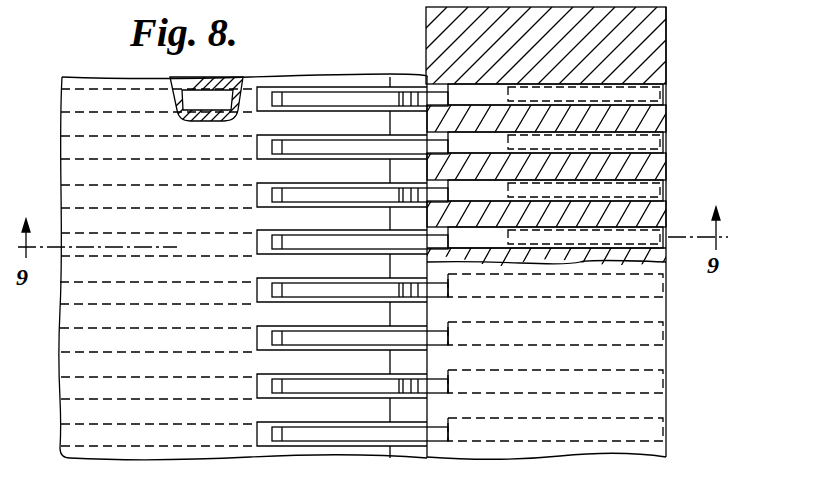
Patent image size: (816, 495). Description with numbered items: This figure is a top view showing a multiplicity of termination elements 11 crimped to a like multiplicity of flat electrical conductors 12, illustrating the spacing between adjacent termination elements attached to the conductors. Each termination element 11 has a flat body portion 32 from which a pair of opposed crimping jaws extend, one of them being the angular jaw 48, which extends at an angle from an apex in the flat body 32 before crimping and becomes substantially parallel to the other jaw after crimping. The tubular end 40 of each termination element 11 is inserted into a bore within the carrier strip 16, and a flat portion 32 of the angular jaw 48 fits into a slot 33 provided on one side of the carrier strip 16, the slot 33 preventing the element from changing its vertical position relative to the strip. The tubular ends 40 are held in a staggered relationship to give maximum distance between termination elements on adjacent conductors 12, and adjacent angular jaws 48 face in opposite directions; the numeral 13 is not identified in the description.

The body member 13 is at (62, 77).
The flat electrical conductor 12 is at (185, 96).
The termination element 11 is at (321, 100).
The angular jaw 48 is at (407, 93).
The carrier strip 16 is at (668, 37).
The tubular end 40 is at (668, 88).
The slot 33 is at (442, 284).
The flat body portion 32 is at (442, 380).